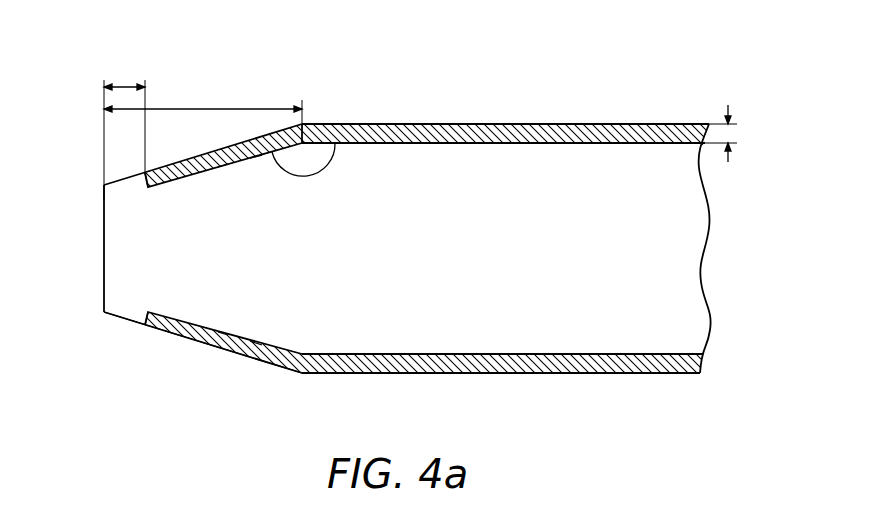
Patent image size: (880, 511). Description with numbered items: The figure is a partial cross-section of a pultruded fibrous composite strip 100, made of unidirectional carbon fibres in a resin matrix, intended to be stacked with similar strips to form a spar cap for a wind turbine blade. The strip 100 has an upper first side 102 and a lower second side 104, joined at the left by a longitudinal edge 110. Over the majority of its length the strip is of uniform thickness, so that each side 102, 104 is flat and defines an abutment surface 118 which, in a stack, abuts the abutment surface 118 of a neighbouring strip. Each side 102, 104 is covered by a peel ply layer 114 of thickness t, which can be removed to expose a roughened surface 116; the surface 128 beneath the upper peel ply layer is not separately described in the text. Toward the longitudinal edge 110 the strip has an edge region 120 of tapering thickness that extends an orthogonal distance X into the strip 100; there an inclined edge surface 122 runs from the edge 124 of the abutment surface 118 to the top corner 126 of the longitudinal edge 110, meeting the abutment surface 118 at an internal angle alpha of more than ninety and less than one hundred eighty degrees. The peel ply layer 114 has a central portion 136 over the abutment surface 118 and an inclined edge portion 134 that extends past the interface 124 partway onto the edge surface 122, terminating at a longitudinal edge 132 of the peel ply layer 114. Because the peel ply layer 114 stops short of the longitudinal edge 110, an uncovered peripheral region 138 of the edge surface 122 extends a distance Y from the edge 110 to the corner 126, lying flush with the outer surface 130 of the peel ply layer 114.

The pultruded fibrous composite strip 100 is at (90, 52).
The first side 102 is at (436, 109).
The second side 104 is at (357, 382).
The longitudinal edge 110 is at (104, 250).
The peel ply layer 114 is at (617, 133).
The roughened surface 116 is at (223, 166).
The abutment surface 118 is at (570, 143).
The edge region 120 is at (148, 356).
The edge surface 122 is at (198, 173).
The edge of the abutment surface 124 is at (307, 123).
The top corner 126 is at (102, 184).
The inner surface of first wall 128 is at (418, 143).
The outer surface of the peel ply layer 130 is at (378, 124).
The edge of the peel ply layer 132 is at (146, 186).
The edge portion of the peel ply layer 134 is at (257, 157).
The central portion of the peel ply layer 136 is at (522, 133).
The peripheral region 138 is at (128, 178).